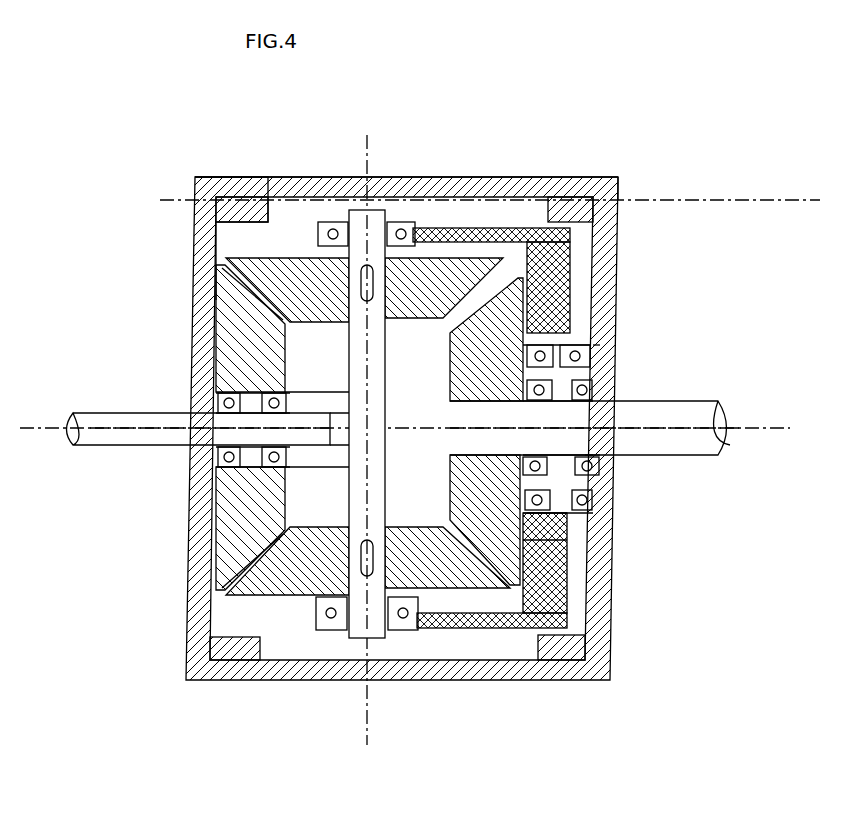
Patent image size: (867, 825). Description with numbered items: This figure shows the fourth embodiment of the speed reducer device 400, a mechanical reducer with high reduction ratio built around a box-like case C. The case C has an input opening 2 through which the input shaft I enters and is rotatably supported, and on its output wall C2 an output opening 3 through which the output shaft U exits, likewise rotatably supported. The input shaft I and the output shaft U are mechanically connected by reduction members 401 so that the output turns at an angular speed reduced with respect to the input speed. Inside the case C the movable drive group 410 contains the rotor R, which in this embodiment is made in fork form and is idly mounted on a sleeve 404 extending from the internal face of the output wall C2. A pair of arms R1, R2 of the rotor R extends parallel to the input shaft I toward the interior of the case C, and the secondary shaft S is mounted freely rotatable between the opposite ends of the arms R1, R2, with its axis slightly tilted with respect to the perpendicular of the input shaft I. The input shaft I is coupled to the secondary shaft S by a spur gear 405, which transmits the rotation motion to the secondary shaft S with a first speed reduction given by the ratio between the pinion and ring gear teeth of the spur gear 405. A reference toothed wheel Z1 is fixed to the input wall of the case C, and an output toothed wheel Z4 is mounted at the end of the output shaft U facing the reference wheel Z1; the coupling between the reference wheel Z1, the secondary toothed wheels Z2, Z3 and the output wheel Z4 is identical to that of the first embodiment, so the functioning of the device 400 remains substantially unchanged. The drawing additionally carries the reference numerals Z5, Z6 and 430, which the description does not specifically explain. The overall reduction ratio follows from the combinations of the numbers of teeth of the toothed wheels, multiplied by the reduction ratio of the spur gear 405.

The speed reducer device 400 is at (415, 113).
The reduction members 401 is at (285, 226).
The input opening 2 is at (200, 395).
The output opening 3 is at (615, 359).
The sleeve 404 is at (618, 484).
The spur gear 405 is at (337, 410).
The movable drive group 410 is at (240, 485).
The rotor bracket 430 is at (540, 555).
The reference toothed wheel Z1 is at (250, 330).
The secondary toothed wheel Z2 is at (300, 270).
The secondary toothed wheel Z3 is at (470, 580).
The output toothed wheel Z4 is at (520, 300).
The fifth gear Z5 is at (303, 490).
The sixth gear Z6 is at (545, 350).
The secondary shaft S is at (380, 222).
The output shaft U is at (626, 411).
The input shaft I is at (158, 413).
The rotor R is at (495, 530).
The arm of rotor R1 is at (500, 225).
The arm of rotor R2 is at (470, 628).
The box-like case C is at (200, 650).
The output wall C2 is at (618, 177).